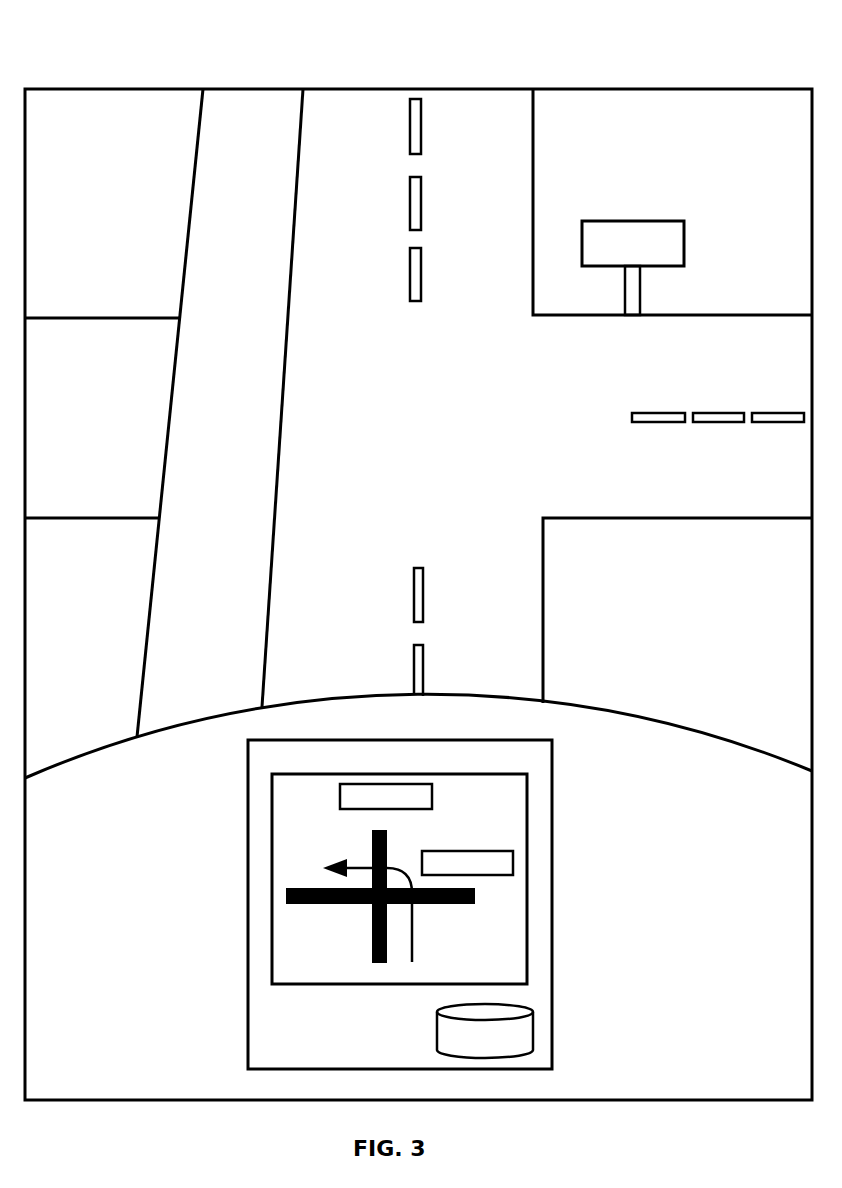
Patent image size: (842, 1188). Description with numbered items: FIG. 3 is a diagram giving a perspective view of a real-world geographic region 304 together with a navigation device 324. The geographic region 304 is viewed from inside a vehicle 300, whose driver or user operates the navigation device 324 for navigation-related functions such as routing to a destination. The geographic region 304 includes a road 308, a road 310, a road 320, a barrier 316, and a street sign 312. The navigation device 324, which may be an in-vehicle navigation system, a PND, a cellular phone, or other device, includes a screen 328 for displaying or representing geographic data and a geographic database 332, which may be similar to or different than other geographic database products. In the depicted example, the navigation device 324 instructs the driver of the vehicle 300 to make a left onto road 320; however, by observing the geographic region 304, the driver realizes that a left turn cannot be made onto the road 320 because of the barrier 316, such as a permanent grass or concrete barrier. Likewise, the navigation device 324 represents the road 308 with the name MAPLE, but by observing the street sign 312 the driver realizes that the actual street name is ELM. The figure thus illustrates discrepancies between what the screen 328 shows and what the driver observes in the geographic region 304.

The vehicle 300 is at (126, 88).
The geographic region 304 is at (655, 578).
The road 308 is at (658, 367).
The road 310 is at (466, 138).
The street sign 312 is at (658, 220).
The barrier 316 is at (248, 178).
The road 320 is at (115, 492).
The navigation device 324 is at (481, 740).
The screen 328 is at (455, 948).
The geographic database 332 is at (533, 1033).